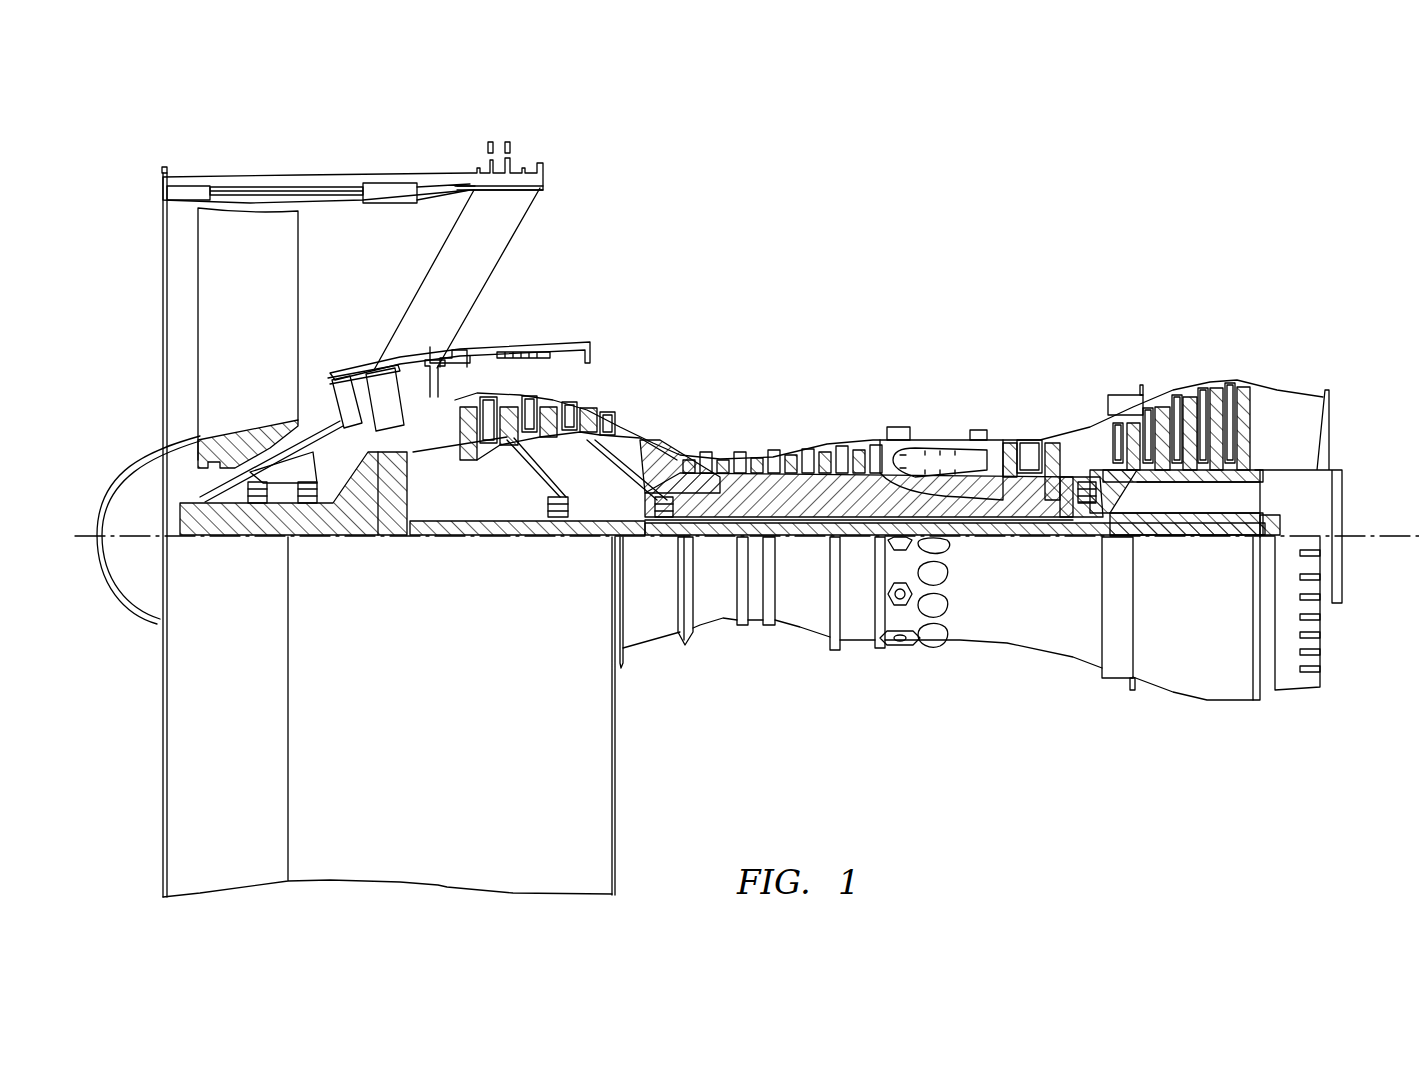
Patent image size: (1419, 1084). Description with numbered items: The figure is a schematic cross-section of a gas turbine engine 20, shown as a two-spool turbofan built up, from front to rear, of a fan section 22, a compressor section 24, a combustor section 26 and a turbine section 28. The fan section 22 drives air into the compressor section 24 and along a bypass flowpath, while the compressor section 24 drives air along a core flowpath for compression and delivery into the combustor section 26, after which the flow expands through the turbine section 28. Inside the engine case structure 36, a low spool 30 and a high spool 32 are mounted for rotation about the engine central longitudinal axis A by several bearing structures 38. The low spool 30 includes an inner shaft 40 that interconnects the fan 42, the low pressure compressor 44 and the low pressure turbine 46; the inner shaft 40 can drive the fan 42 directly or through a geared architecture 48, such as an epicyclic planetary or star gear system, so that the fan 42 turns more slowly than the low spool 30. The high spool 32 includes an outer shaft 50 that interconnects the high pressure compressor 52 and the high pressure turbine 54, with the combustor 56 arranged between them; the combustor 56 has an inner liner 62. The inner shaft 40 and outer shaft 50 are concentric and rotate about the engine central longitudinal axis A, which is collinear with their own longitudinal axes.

The gas turbine engine 20 is at (990, 220).
The fan section 22 is at (440, 153).
The compressor section 24 is at (450, 322).
The combustor section 26 is at (1013, 322).
The turbine section 28 is at (1265, 322).
The low spool 30 is at (808, 547).
The high spool 32 is at (857, 493).
The engine case structure 36 is at (860, 644).
The bearing structures 38 is at (258, 503).
The inner shaft 40 is at (640, 540).
The fan 42 is at (260, 351).
The low pressure compressor 44 is at (531, 418).
The low pressure turbine 46 is at (1192, 392).
The geared architecture 48 is at (390, 513).
The outer shaft 50 is at (937, 518).
The high pressure compressor 52 is at (785, 497).
The high pressure turbine 54 is at (1028, 437).
The combustor 56 is at (948, 470).
The inner liner 62 is at (451, 185).
The engine central longitudinal axis A is at (1393, 533).